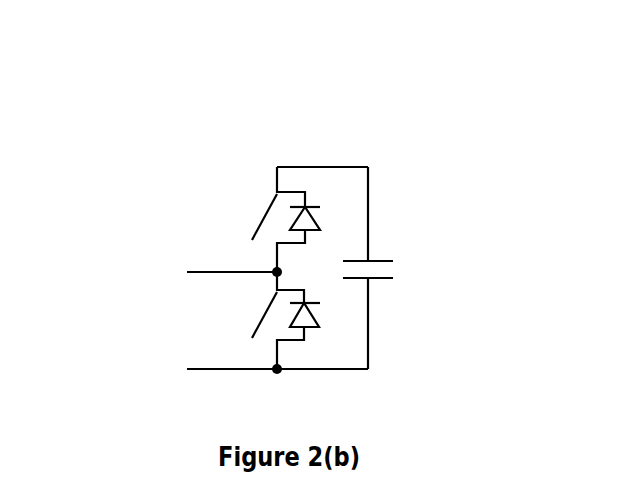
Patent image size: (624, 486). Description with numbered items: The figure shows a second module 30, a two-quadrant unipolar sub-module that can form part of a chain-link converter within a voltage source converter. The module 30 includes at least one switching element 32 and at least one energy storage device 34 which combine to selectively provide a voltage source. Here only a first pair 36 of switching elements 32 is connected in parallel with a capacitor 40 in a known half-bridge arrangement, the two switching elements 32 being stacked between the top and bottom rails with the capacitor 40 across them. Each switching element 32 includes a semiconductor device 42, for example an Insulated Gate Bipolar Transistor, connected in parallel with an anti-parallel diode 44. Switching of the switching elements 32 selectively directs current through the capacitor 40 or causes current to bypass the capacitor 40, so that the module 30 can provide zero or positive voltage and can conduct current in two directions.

The module 30 is at (193, 158).
The switching element 32 is at (228, 215).
The energy storage device 34 is at (383, 258).
The first pair of switching elements 36 is at (286, 138).
The capacitor 40 is at (430, 268).
The semiconductor device 42 is at (273, 200).
The anti-parallel diode 44 is at (317, 218).